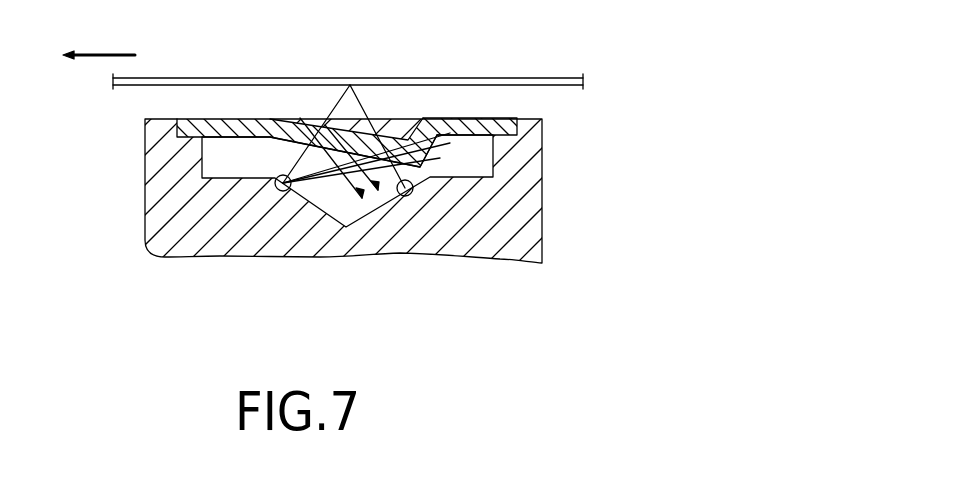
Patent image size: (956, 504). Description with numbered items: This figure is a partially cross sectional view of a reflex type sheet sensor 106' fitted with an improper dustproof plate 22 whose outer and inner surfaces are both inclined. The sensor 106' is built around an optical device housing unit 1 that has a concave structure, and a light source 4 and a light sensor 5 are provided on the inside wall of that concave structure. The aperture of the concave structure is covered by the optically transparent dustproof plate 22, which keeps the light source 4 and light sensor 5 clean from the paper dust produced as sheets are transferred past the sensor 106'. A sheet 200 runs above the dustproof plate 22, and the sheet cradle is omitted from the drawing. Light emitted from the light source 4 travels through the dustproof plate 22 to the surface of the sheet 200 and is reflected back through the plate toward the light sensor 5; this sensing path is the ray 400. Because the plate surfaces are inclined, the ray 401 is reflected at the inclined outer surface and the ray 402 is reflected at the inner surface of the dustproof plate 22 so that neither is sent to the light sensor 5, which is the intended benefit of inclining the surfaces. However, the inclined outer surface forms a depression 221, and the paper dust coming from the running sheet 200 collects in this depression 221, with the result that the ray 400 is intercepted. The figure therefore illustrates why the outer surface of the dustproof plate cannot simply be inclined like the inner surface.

The optical device housing unit 1 is at (144, 193).
The dustproof plate 22 is at (212, 118).
The depression 221 is at (470, 143).
The sheet 200 is at (512, 78).
The ray 400 is at (323, 128).
The ray 401 is at (373, 128).
The ray 402 is at (408, 132).
The light source 4 is at (274, 190).
The light sensor 5 is at (405, 192).
The reflex type sheet sensor 106' is at (658, 195).